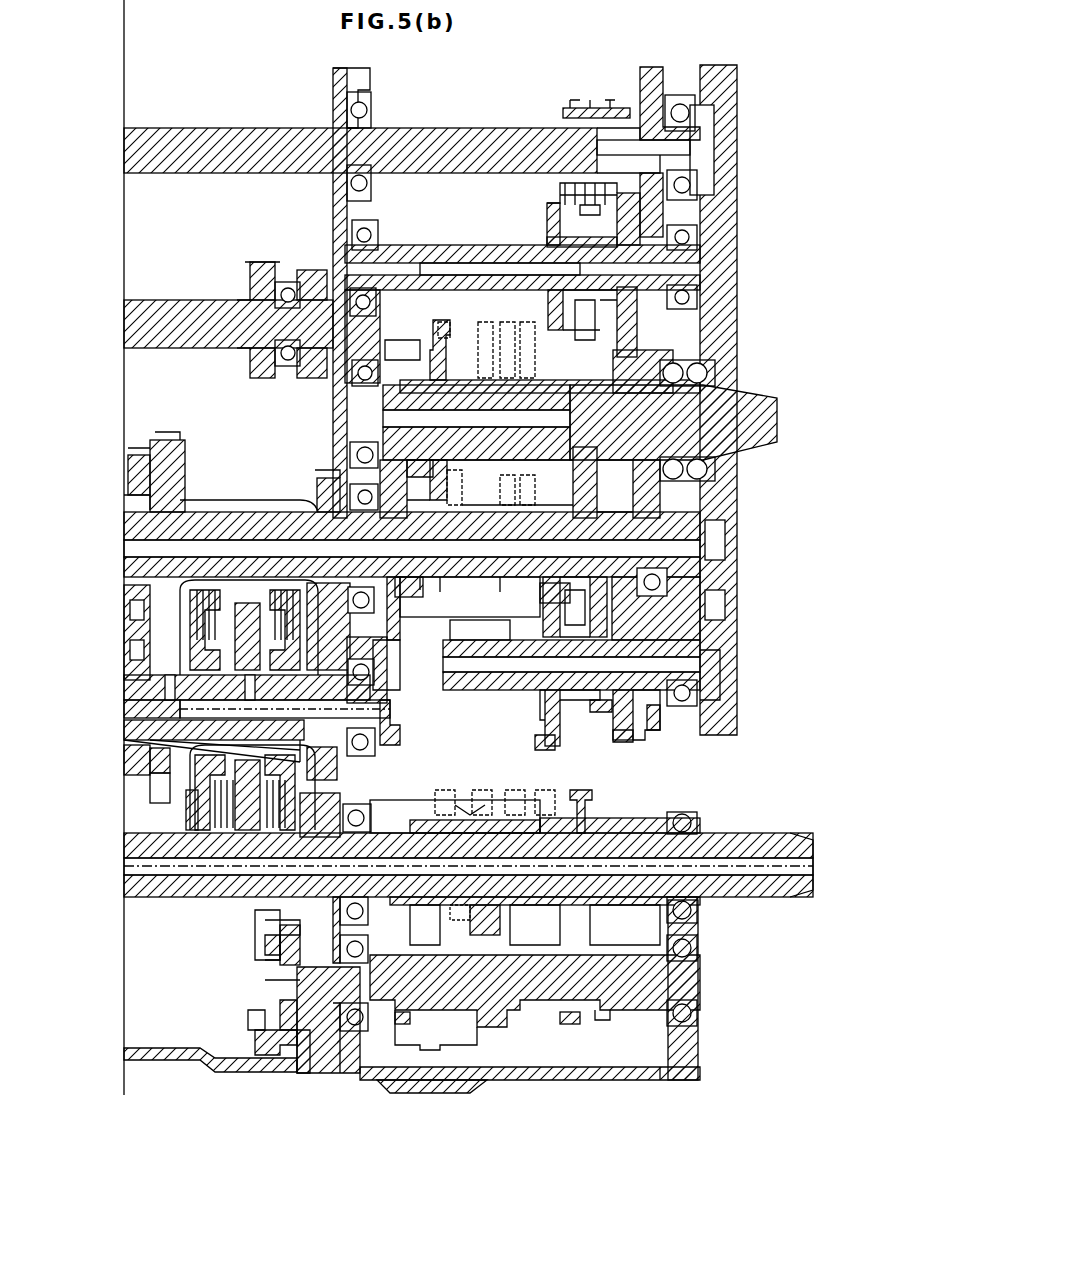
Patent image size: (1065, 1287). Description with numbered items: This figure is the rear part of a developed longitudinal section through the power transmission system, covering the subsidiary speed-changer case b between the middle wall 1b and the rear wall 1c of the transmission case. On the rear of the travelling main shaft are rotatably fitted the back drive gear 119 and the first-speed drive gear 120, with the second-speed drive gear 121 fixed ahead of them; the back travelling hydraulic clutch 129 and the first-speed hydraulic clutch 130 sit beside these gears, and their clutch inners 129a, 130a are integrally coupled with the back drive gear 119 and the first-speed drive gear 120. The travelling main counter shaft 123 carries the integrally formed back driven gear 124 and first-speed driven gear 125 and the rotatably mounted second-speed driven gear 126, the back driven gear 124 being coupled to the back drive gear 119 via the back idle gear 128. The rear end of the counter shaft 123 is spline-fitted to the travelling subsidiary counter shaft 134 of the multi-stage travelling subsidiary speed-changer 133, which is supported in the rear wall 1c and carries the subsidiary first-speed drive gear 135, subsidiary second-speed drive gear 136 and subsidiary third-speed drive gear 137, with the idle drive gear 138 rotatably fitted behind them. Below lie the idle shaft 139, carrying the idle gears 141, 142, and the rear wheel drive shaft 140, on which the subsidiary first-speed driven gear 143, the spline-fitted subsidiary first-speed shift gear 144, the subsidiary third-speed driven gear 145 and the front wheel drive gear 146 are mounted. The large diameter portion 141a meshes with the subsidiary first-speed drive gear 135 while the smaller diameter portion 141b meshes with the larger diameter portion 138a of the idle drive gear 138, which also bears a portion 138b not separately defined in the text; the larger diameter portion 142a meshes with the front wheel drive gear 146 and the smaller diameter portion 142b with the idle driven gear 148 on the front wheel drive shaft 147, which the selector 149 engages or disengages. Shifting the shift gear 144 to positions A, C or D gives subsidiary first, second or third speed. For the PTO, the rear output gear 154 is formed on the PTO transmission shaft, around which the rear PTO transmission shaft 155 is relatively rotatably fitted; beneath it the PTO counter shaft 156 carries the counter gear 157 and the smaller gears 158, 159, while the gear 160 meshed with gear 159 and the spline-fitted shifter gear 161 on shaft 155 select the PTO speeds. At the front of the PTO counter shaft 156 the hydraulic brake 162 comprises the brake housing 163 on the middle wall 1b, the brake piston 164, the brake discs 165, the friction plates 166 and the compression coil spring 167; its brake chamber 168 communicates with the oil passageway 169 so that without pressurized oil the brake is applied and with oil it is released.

The middle wall 1b is at (345, 378).
The rear wall 1c is at (718, 930).
The back drive gear 119 is at (392, 710).
The 1st-speed drive gear 120 is at (168, 770).
The 2nd-speed drive gear 121 is at (165, 880).
The travelling main counter shaft 123 is at (245, 512).
The back driven gear 124 is at (318, 470).
The 1st-speed driven gear 125 is at (170, 432).
The 2nd-speed driven gear 126 is at (140, 448).
The back idle gear 128 is at (375, 645).
The back travelling hydraulic clutch 129 is at (278, 928).
The clutch inner 129a is at (400, 730).
The 1st-speed hydraulic clutch 130 is at (230, 830).
The clutch inner 130a is at (200, 818).
The travelling subsidiary speed-changer 133 is at (430, 350).
The travelling subsidiary counter shaft 134 is at (450, 585).
The subsidiary 1st-speed drive gear 135 is at (540, 588).
The subsidiary 2nd-speed drive gear 136 is at (515, 680).
The subsidiary 3rd-speed drive gear 137 is at (410, 597).
The idle drive gear 138 is at (575, 488).
The larger diameter portion 138a is at (690, 610).
The gear 138b is at (555, 612).
The idle shaft 139 is at (500, 600).
The rear wheel drive shaft 140 is at (760, 410).
The idle gear 141 is at (552, 746).
The large diameter portion 141a is at (555, 750).
The smaller diameter portion 141b is at (608, 712).
The idle gear 142 is at (655, 735).
The larger diameter portion 142a is at (635, 742).
The smaller diameter portion 142b is at (660, 730).
The subsidiary 1st-speed driven gear 143 is at (560, 330).
The subsidiary 1st-speed shift gear 144 is at (448, 320).
The subsidiary 3rd-speed driven gear 145 is at (418, 340).
The front wheel drive gear 146 is at (645, 352).
The front wheel drive shaft 147 is at (218, 128).
The idle driven gear 148 is at (660, 68).
The selector 149 is at (590, 102).
The rear output gear 154 is at (410, 815).
The rear PTO transmission shaft 155 is at (635, 905).
The PTO counter shaft 156 is at (550, 975).
The counter gear 157 is at (395, 1042).
The gear 158 is at (492, 1080).
The gear 159 is at (582, 1024).
The gear 160 is at (592, 795).
The shifter gear 161 is at (456, 800).
The hydraulic brake 162 is at (265, 980).
The brake housing 163 is at (297, 1065).
The brake piston 164 is at (255, 1038).
The brake discs 165 is at (285, 1003).
The friction plates 166 is at (313, 1073).
The compression coil spring 167 is at (248, 1018).
The brake chamber 168 is at (255, 940).
The oil passageway 169 is at (448, 905).
The subsidiary speed-changer case b is at (556, 1070).